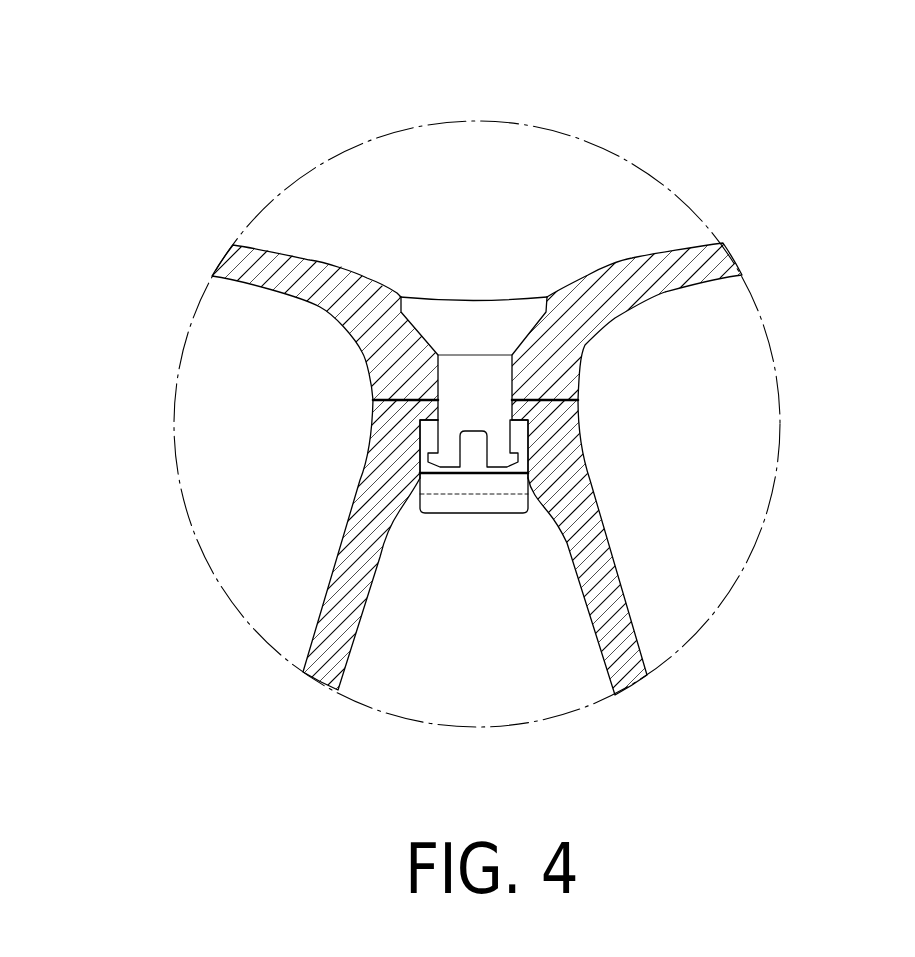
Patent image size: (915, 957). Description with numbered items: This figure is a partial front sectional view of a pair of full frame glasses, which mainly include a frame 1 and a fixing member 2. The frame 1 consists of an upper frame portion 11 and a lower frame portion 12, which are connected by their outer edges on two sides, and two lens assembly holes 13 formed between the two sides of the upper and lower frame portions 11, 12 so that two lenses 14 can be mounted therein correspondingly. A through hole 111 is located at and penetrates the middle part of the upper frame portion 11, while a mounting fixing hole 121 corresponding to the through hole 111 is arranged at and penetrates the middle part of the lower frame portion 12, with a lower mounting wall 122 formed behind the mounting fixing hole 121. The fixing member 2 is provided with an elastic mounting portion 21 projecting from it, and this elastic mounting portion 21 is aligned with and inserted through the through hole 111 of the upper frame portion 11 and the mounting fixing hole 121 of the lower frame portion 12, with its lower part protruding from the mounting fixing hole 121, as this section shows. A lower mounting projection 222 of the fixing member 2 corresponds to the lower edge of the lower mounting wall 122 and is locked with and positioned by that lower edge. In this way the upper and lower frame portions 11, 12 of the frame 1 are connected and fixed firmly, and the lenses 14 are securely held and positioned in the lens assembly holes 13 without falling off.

The frame 1 is at (457, 407).
The fixing member 2 is at (457, 382).
The upper frame portion 11 is at (308, 265).
The lower frame portion 12 is at (350, 613).
The lens assembly holes 13 is at (265, 292).
The lenses 14 is at (222, 413).
The elastic mounting portion 21 is at (453, 448).
The through hole 111 is at (497, 362).
The mounting fixing hole 121 is at (522, 412).
The lower mounting wall 122 is at (520, 445).
The lower mounting projection 222 is at (503, 487).